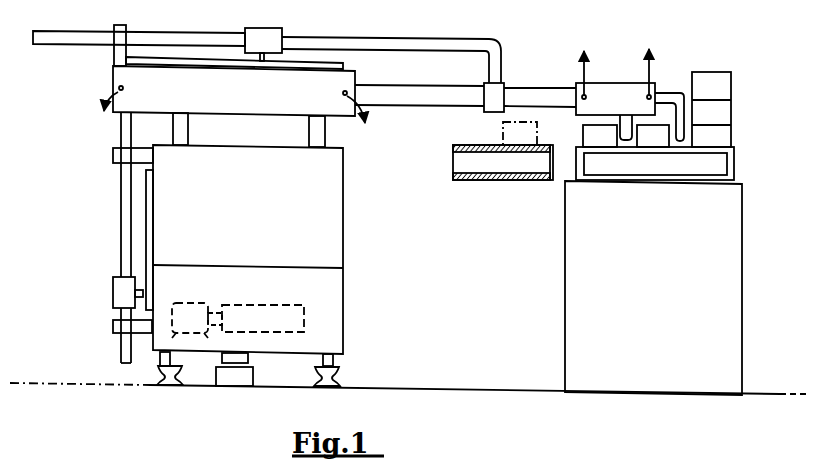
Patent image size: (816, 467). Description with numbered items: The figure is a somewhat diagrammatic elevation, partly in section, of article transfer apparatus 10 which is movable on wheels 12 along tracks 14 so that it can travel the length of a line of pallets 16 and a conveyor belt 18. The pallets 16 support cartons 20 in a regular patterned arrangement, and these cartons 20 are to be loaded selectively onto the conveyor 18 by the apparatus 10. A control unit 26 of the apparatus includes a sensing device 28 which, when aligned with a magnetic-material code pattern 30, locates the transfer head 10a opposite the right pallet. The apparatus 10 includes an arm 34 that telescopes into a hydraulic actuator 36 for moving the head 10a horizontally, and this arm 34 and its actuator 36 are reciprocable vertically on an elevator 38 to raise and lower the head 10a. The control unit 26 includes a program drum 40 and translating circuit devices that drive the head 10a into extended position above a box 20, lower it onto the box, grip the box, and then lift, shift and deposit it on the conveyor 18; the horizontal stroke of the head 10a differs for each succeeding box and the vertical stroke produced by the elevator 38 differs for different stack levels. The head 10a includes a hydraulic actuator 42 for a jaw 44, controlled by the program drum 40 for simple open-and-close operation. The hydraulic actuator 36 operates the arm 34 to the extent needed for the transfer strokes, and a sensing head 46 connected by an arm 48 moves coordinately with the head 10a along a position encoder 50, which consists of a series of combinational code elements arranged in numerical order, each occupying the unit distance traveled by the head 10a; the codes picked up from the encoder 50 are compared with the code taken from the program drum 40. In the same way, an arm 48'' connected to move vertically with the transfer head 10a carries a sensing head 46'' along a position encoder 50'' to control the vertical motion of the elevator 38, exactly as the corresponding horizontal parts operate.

The transfer apparatus 10 is at (117, 184).
The transfer head 10a is at (623, 71).
The wheels 12 is at (336, 370).
The tracks 14 is at (336, 386).
The pallets 16 is at (588, 172).
The conveyor belt 18 is at (524, 181).
The cartons 20 is at (538, 124).
The control unit 26 is at (312, 325).
The sensing device 28 is at (250, 361).
The magnetic-material code pattern 30 is at (216, 374).
The arm 34 is at (460, 85).
The hydraulic actuator 36 is at (240, 98).
The elevator 38 is at (241, 210).
The program drum 40 is at (245, 304).
The hydraulic actuator 42 is at (576, 84).
The jaw 44 is at (684, 80).
The sensing head 46 is at (356, 37).
The sensing head 46'' is at (113, 292).
The arm 48 is at (506, 75).
The arm 48'' is at (120, 237).
The position encoder 50 is at (234, 58).
The position encoder 50'' is at (121, 240).